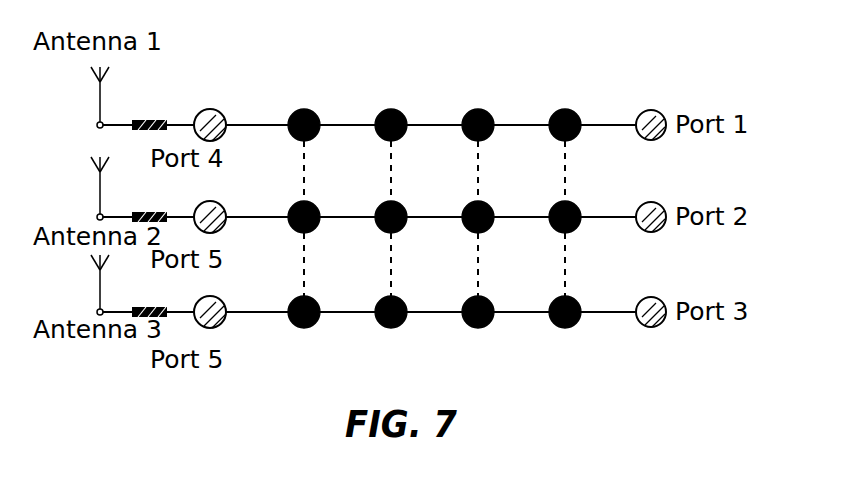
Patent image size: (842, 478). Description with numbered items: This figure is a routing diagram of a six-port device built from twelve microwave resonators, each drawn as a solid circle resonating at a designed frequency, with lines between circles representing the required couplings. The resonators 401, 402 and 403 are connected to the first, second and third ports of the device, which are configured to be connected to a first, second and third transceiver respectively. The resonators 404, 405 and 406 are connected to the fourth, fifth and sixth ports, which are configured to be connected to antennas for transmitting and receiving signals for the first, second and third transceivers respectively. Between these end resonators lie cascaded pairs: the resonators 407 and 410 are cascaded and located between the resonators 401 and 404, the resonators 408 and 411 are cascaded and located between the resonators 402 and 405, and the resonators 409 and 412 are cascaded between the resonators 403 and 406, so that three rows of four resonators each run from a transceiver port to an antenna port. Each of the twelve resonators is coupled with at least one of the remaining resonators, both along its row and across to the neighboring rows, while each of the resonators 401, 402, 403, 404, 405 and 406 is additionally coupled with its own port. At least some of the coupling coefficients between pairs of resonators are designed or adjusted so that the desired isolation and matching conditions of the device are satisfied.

The resonator 401 is at (586, 136).
The resonator 402 is at (586, 232).
The resonator 403 is at (586, 323).
The resonator 404 is at (326, 136).
The resonator 405 is at (326, 232).
The resonator 406 is at (326, 323).
The resonator 407 is at (498, 136).
The resonator 408 is at (500, 232).
The resonator 409 is at (500, 323).
The resonator 410 is at (411, 136).
The resonator 411 is at (414, 232).
The resonator 412 is at (414, 323).